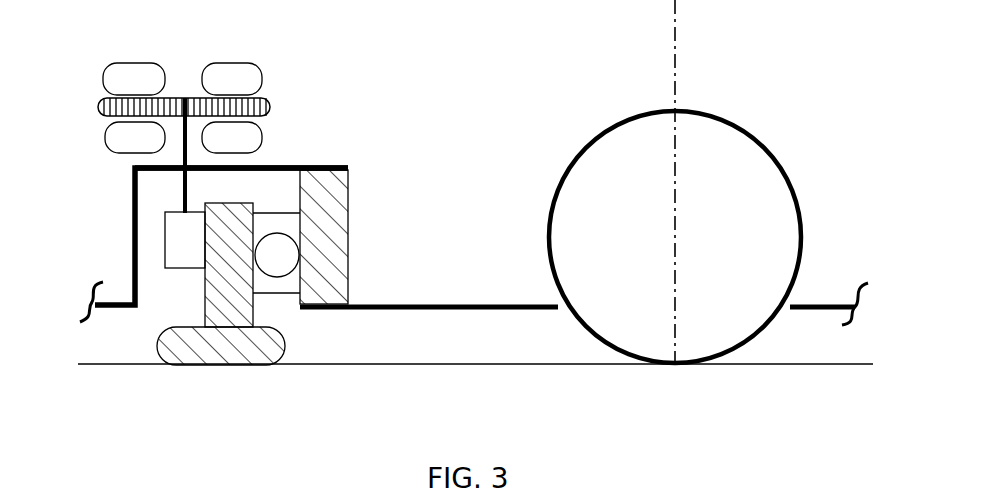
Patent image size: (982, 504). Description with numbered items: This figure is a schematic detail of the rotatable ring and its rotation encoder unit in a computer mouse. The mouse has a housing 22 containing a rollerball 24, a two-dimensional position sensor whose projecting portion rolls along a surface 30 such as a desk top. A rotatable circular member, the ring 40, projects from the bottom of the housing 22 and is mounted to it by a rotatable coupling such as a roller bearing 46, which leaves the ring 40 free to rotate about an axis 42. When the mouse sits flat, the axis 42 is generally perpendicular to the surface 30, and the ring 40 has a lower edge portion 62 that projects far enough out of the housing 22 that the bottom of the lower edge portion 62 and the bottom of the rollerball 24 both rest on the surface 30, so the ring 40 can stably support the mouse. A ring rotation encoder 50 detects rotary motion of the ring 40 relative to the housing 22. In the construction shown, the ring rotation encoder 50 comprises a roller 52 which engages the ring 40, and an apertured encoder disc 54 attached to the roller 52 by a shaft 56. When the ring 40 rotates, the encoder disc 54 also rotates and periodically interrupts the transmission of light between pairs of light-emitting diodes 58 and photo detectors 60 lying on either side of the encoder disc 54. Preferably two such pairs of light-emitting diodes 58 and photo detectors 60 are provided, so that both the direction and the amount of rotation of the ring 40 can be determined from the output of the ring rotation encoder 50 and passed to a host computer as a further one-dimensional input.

The housing 22 is at (122, 298).
The rollerball 24 is at (640, 218).
The surface 30 is at (815, 367).
The ring 40 is at (207, 283).
The axis 42 is at (676, 75).
The roller bearing 46 is at (275, 258).
The ring rotation encoder 50 is at (203, 116).
The roller 52 is at (188, 235).
The encoder disc 54 is at (172, 107).
The shaft 56 is at (183, 197).
The light-emitting diodes 58 is at (135, 78).
The photo detectors 60 is at (130, 143).
The lower edge portion 62 is at (237, 350).